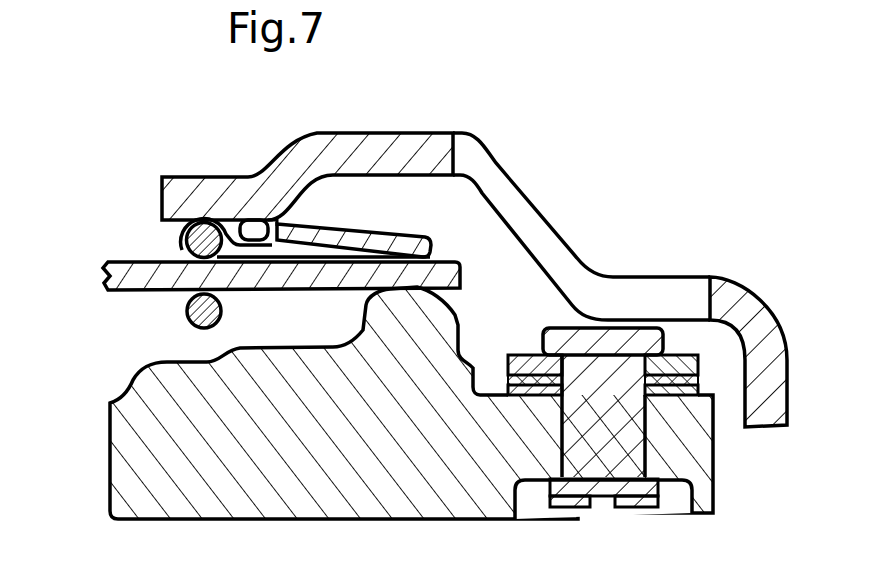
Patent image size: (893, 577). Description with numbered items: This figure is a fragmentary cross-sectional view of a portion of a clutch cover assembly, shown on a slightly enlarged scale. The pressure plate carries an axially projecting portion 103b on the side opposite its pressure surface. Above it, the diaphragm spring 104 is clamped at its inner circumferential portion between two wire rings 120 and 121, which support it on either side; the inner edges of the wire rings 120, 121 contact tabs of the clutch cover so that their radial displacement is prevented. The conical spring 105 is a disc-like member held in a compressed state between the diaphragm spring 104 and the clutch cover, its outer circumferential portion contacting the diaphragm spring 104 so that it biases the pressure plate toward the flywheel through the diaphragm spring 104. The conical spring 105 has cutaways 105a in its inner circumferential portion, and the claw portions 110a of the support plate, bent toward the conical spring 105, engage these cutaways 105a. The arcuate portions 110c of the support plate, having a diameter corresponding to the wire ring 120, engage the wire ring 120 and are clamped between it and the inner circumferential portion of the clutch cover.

The projecting portion 103b is at (423, 328).
The diaphragm spring 104 is at (131, 291).
The conical spring 105 is at (370, 243).
The cutaways 105a is at (250, 219).
The claw portions 110a is at (252, 219).
The arcuate portions 110c is at (183, 238).
The wire ring 120 is at (187, 253).
The wire ring 121 is at (184, 314).